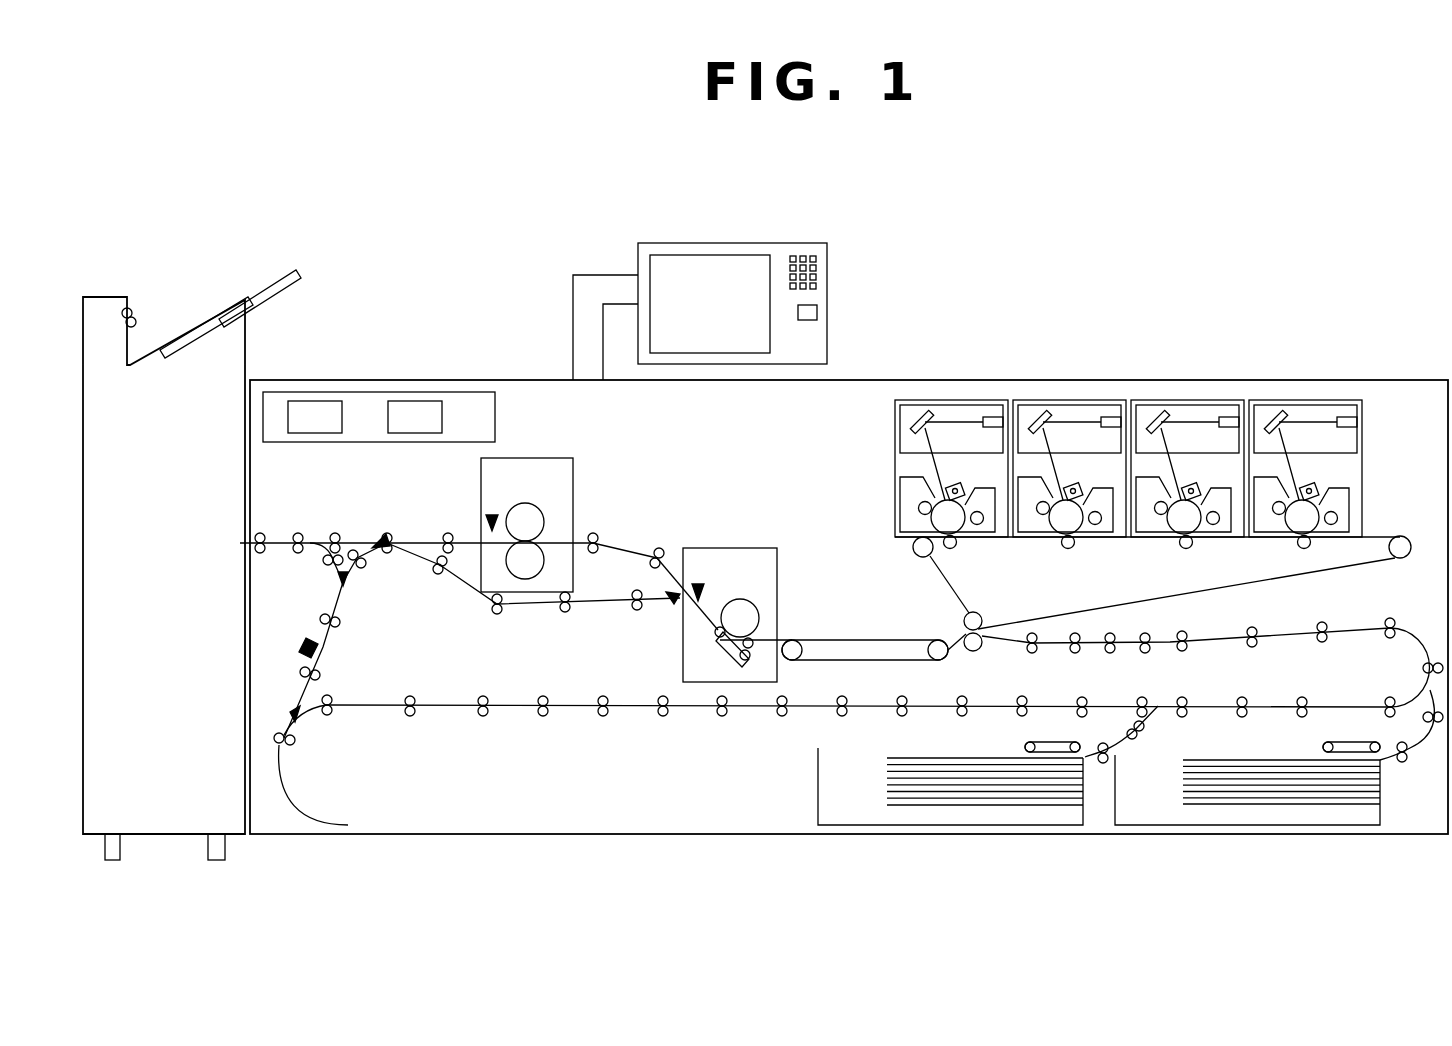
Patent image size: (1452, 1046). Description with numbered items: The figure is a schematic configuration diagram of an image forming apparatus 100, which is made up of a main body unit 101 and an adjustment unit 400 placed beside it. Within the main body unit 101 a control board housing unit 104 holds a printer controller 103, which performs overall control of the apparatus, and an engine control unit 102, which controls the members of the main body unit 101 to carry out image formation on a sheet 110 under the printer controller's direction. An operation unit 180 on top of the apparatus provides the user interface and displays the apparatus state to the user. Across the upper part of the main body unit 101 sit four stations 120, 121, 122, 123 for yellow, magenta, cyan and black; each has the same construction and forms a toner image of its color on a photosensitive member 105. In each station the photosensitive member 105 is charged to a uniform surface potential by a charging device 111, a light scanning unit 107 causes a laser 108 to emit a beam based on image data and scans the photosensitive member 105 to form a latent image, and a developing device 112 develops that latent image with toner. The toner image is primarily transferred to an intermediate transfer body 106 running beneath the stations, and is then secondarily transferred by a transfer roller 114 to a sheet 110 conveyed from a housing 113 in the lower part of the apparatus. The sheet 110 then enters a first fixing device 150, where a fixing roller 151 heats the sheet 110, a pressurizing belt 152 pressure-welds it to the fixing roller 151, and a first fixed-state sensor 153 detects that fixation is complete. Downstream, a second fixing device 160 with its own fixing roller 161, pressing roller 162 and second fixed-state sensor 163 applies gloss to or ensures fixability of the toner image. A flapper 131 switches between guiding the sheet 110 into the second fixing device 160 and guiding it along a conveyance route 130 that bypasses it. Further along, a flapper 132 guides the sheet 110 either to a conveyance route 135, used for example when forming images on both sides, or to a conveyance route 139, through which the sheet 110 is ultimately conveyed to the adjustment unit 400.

The image forming apparatus 100 is at (929, 246).
The main body unit 101 is at (1414, 380).
The engine control unit 102 is at (316, 401).
The printer controller 103 is at (413, 401).
The control board housing unit 104 is at (482, 392).
The photosensitive member 105 is at (962, 538).
The intermediate transfer body 106 is at (940, 590).
The light scanning unit 107 is at (952, 405).
The laser 108 is at (993, 417).
The sheet 110 is at (933, 758).
The charging device 111 is at (962, 492).
The developing device 112 is at (900, 515).
The housing 113 is at (818, 790).
The transfer roller 114 is at (984, 645).
The station 120 is at (905, 400).
The station 121 is at (1070, 400).
The station 122 is at (1163, 400).
The station 123 is at (1281, 400).
The conveyance route 130 is at (537, 606).
The flapper 131 is at (670, 604).
The flapper 132 is at (380, 540).
The conveyance route 135 is at (323, 648).
The conveyance route 139 is at (283, 543).
The first fixing device 150 is at (753, 548).
The fixing roller 151 is at (745, 600).
The pressurizing belt 152 is at (722, 646).
The first fixed-state sensor 153 is at (698, 584).
The second fixing device 160 is at (553, 458).
The fixing roller 161 is at (532, 505).
The pressing roller 162 is at (540, 566).
The second fixed-state sensor 163 is at (488, 516).
The operation unit 180 is at (638, 248).
The adjustment unit 400 is at (127, 297).